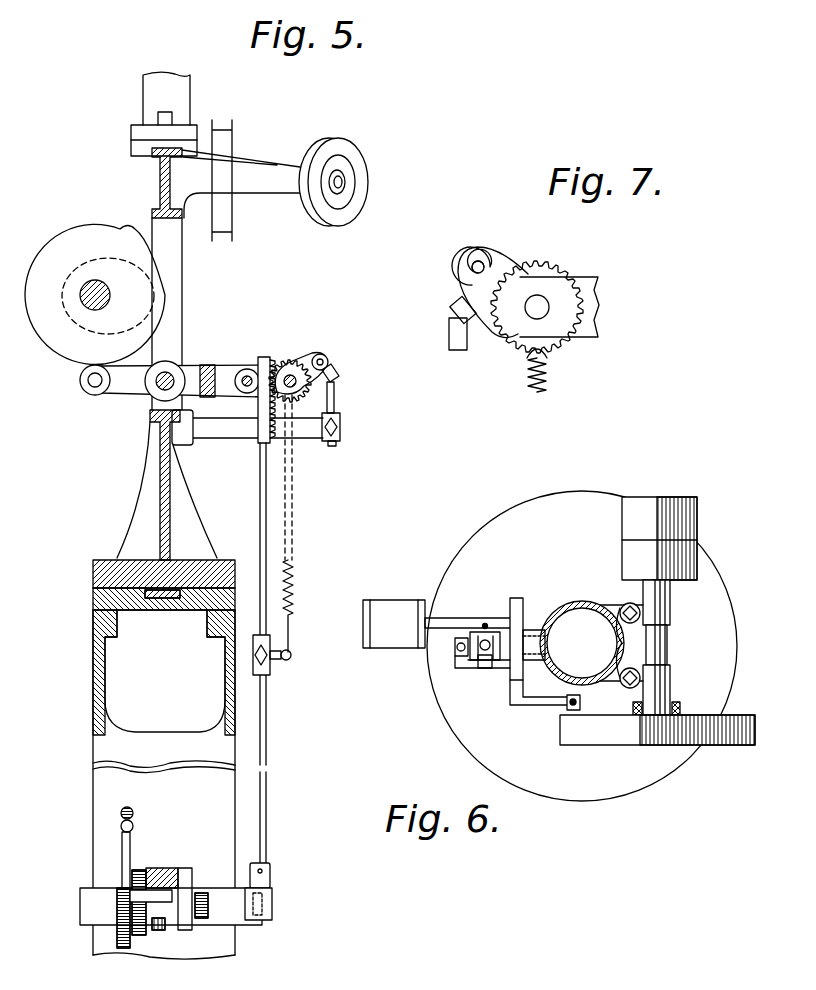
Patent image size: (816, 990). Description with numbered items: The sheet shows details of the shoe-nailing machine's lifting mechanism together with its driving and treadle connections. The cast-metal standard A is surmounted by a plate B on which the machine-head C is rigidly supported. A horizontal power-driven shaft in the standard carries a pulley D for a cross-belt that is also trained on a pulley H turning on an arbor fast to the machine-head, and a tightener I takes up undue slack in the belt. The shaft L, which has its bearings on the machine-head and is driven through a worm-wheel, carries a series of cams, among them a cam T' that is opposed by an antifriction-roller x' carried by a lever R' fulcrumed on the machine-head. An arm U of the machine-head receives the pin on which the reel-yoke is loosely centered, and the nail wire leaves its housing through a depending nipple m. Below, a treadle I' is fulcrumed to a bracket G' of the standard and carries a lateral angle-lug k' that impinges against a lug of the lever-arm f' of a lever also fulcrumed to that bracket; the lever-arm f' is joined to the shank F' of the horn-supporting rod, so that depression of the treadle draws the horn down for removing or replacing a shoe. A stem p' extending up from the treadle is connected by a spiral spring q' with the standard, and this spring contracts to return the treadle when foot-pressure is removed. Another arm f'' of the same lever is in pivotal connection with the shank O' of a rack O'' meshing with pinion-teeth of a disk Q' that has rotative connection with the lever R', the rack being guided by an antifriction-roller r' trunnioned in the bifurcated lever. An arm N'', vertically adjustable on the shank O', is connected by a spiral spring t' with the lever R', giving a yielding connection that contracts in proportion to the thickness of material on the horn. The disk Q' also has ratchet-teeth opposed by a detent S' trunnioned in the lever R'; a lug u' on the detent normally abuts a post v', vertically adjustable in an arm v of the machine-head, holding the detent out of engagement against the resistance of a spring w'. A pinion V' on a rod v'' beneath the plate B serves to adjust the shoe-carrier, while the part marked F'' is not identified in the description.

In FIG. 5, the arm of the machine-head U is at (140, 97).
In FIG. 5, the pulley H is at (235, 128).
In FIG. 5, the shank F' is at (351, 182).
In FIG. 5, the shaft L is at (110, 290).
In FIG. 5, the cam T' is at (95, 294).
In FIG. 5, the antifriction-roller x' is at (156, 381).
In FIG. 5, the lever R' is at (208, 364).
In FIG. 7, the lever R' is at (574, 307).
In FIG. 5, the antifriction-roller r' is at (247, 361).
In FIG. 5, the disk Q' is at (298, 364).
In FIG. 7, the disk Q' is at (537, 294).
In FIG. 5, the detent S' is at (338, 363).
In FIG. 5, the lug u' is at (352, 378).
In FIG. 7, the lug u' is at (449, 305).
In FIG. 5, the post v' is at (347, 398).
In FIG. 5, the arm of the machine-head v is at (327, 439).
In FIG. 5, the rack O'' is at (247, 420).
In FIG. 5, the shank O' is at (280, 653).
In FIG. 6, the shank O' is at (589, 703).
In FIG. 5, the arm N'' is at (288, 664).
In FIG. 5, the spiral spring t' is at (303, 606).
In FIG. 7, the spiral spring t' is at (529, 384).
In FIG. 5, the machine-head C is at (160, 497).
In FIG. 5, the plate B is at (92, 598).
In FIG. 5, the pinion V' is at (160, 631).
In FIG. 5, the standard A is at (92, 700).
In FIG. 6, the standard A is at (580, 602).
In FIG. 5, the spiral spring q' is at (140, 816).
In FIG. 5, the stem p' is at (114, 860).
In FIG. 6, the stem p' is at (487, 622).
In FIG. 5, the treadle I' is at (171, 920).
In FIG. 6, the treadle I' is at (439, 624).
In FIG. 5, the bracket G' is at (142, 887).
In FIG. 6, the bracket G' is at (527, 639).
In FIG. 5, the angle-lug k' is at (161, 885).
In FIG. 6, the angle-lug k' is at (476, 627).
In FIG. 5, the nipple m is at (158, 931).
In FIG. 6, the nipple m is at (486, 670).
In FIG. 5, the lever-arm f' is at (209, 905).
In FIG. 6, the lever-arm f' is at (481, 680).
In FIG. 5, the lever-arm f'' is at (276, 891).
In FIG. 6, the lever-arm f'' is at (538, 711).
In FIG. 7, the spring w' is at (474, 292).
In FIG. 7, the rod v'' is at (442, 334).
In FIG. 6, the tightener I is at (659, 606).
In FIG. 6, the pulley D is at (657, 730).
In FIG. 6, the bracket F'' is at (436, 655).